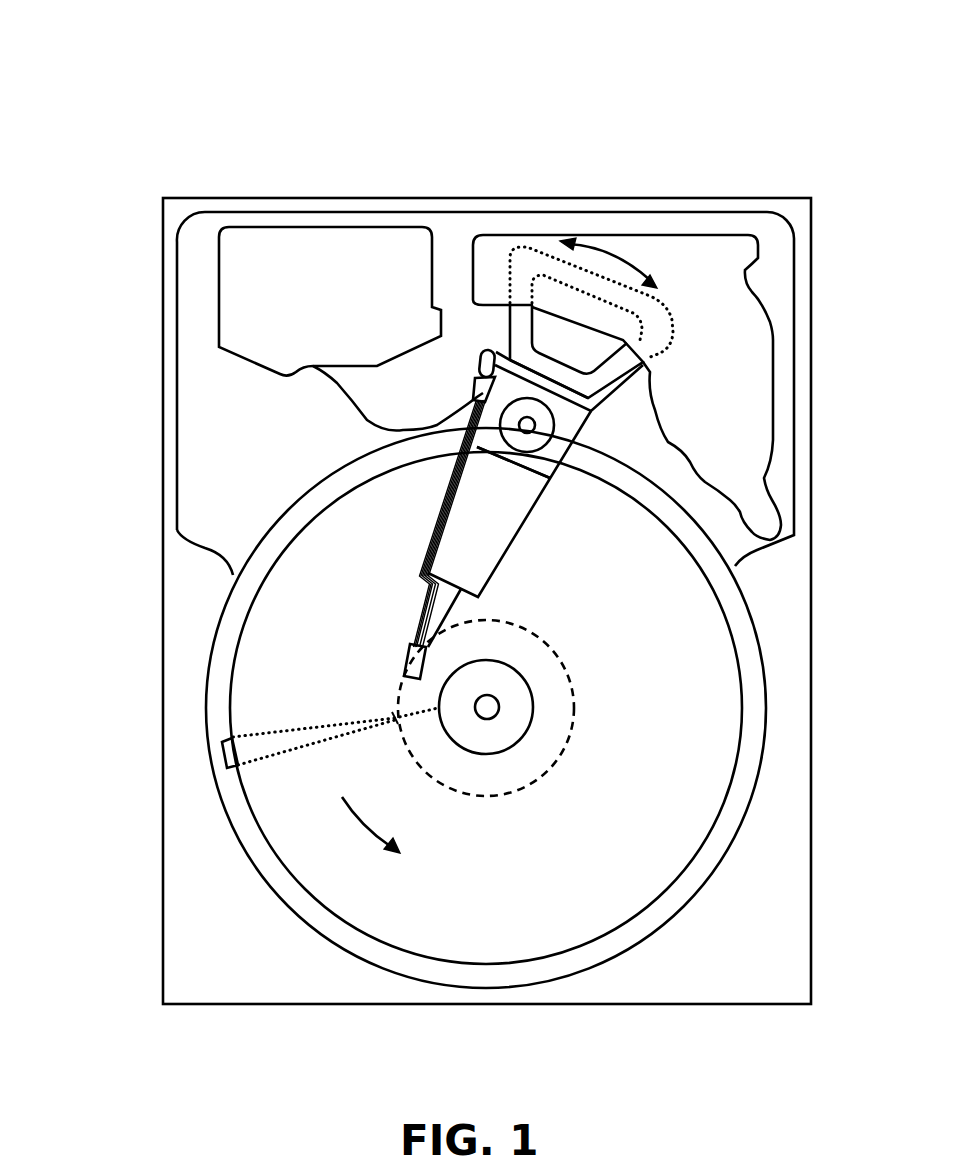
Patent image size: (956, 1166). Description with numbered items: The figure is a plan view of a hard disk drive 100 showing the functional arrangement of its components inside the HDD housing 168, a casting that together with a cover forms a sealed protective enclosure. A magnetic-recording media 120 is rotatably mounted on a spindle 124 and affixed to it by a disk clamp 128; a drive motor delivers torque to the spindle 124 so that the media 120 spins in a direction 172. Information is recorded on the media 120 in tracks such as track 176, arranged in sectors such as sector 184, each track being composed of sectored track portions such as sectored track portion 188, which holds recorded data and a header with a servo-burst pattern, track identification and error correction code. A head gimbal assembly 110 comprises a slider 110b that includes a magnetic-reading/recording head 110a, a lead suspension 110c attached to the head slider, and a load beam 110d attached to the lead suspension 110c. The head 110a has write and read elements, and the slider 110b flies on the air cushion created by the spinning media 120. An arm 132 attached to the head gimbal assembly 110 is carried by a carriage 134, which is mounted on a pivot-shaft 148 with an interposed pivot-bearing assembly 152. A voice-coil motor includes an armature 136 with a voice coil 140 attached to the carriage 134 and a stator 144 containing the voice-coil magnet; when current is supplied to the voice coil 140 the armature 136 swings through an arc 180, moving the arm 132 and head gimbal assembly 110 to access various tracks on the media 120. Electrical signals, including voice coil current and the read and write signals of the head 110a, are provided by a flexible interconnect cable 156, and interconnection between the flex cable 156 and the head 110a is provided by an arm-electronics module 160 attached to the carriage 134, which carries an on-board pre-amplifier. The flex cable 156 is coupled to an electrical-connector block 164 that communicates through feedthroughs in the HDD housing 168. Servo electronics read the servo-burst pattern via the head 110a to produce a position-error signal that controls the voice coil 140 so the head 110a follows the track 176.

The hard disk drive 100 is at (93, 78).
The head gimbal assembly 110 is at (90, 512).
The magnetic-reading/recording head 110a is at (403, 673).
The slider 110b is at (408, 650).
The lead suspension 110c is at (412, 612).
The load beam 110d is at (413, 580).
The magnetic-recording media 120 is at (673, 658).
The spindle 124 is at (497, 705).
The disk clamp 128 is at (513, 723).
The arm 132 is at (480, 542).
The carriage 134 is at (547, 459).
The armature 136 is at (505, 343).
The voice coil 140 is at (522, 317).
The stator 144 is at (740, 327).
The pivot-shaft 148 is at (536, 425).
The pivot-bearing assembly 152 is at (538, 437).
The flexible interconnect cable 156 is at (345, 400).
The arm-electronics module 160 is at (478, 393).
The electrical-connector block 164 is at (243, 300).
The HDD housing 168 is at (790, 212).
The direction 172 is at (375, 828).
The track 176 is at (563, 667).
The arc 180 is at (608, 250).
The sector 184 is at (220, 755).
The sectored track portion 188 is at (395, 714).